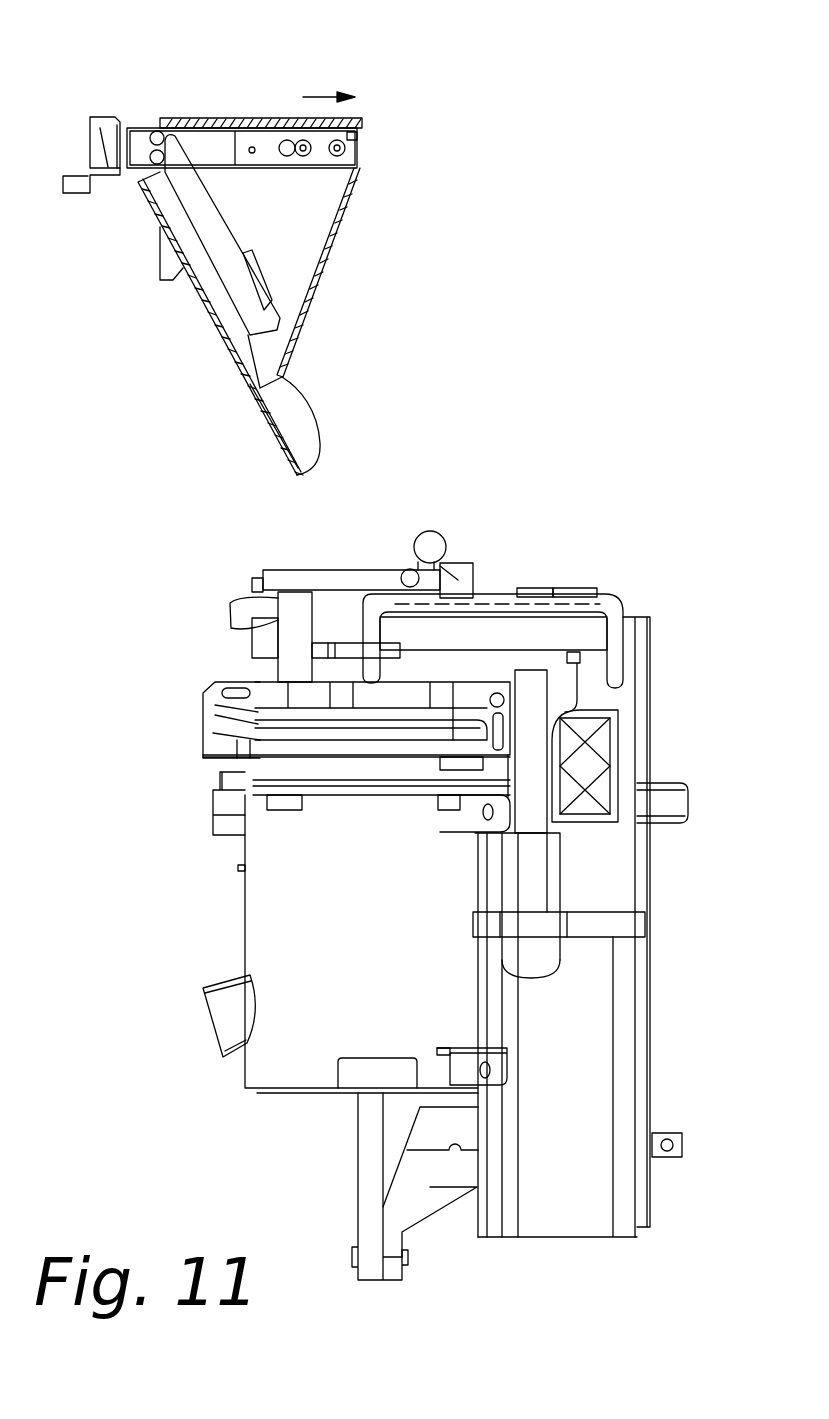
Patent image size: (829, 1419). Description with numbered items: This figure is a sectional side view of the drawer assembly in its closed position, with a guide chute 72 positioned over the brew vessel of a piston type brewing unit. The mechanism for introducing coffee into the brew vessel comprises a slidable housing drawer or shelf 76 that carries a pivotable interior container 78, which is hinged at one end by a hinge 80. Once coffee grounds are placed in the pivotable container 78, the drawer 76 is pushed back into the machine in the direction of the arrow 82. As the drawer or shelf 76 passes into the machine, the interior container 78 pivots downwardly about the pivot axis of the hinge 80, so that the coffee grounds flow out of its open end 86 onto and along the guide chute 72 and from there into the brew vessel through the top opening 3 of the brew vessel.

The top opening 3 is at (326, 575).
The guide chute 72 is at (267, 428).
The drawer 76 is at (88, 147).
The pivotable interior container 78 is at (230, 221).
The hinge 80 is at (150, 138).
The arrow 82 is at (318, 96).
The open end 86 is at (293, 343).